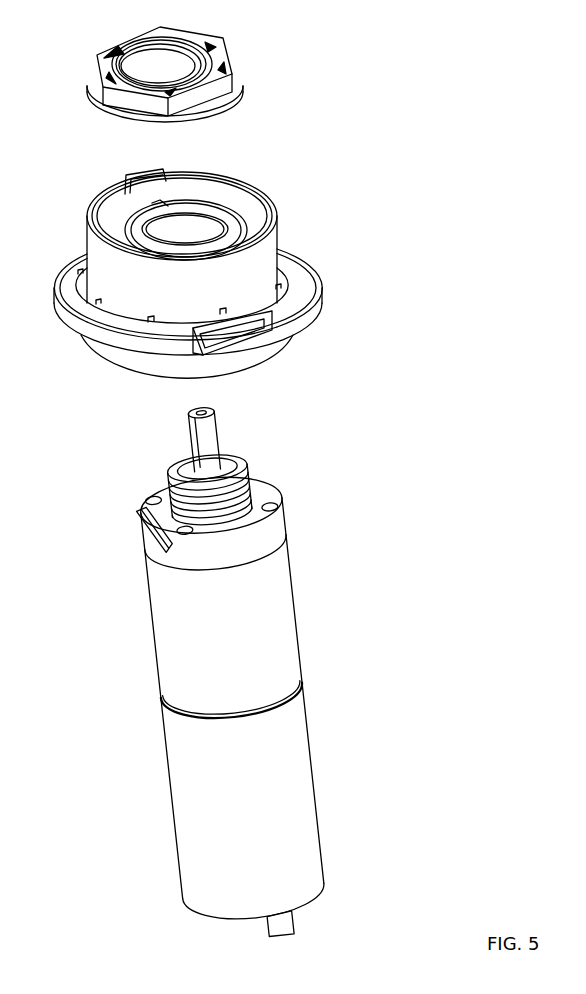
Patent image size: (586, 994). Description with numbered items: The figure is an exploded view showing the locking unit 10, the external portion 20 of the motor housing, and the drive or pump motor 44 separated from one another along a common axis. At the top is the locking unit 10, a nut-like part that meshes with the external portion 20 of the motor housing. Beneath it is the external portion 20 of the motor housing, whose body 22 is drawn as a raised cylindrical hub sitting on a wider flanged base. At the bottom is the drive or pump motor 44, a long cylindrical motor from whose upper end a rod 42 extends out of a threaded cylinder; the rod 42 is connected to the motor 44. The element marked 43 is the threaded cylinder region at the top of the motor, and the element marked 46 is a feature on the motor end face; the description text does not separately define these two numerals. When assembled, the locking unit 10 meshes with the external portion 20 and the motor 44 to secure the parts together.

The locking unit 10 is at (243, 89).
The external portion of the motor housing 20 is at (237, 273).
The body 22 is at (216, 290).
The rod 42 is at (206, 445).
The threaded boss 43 is at (247, 473).
The drive or pump motor 44 is at (271, 640).
The locating lug 46 is at (137, 513).